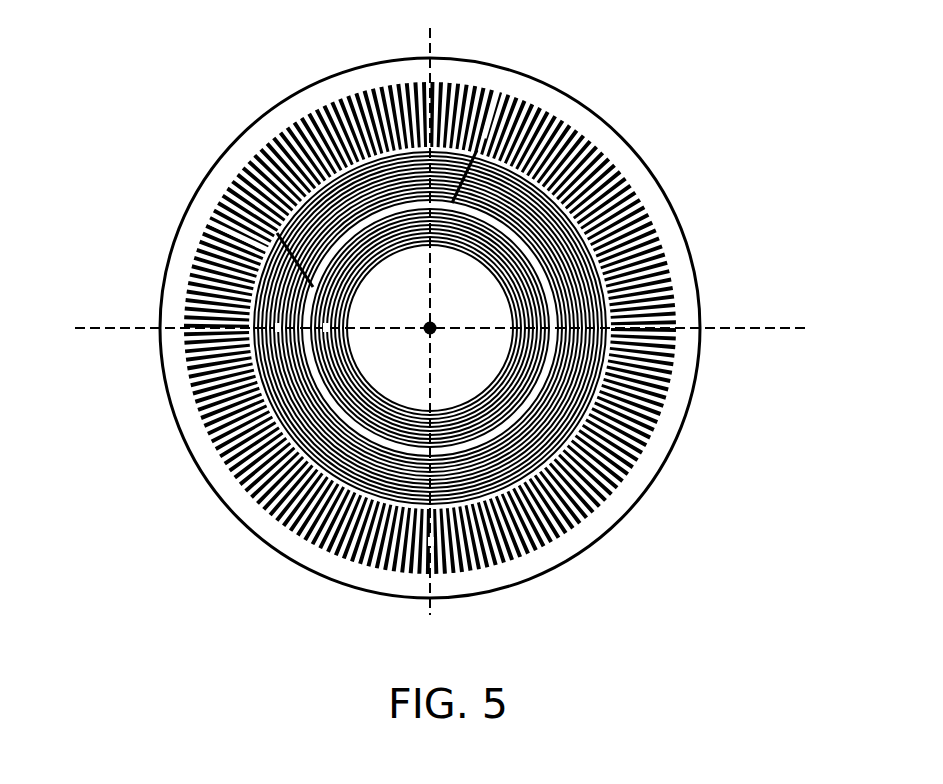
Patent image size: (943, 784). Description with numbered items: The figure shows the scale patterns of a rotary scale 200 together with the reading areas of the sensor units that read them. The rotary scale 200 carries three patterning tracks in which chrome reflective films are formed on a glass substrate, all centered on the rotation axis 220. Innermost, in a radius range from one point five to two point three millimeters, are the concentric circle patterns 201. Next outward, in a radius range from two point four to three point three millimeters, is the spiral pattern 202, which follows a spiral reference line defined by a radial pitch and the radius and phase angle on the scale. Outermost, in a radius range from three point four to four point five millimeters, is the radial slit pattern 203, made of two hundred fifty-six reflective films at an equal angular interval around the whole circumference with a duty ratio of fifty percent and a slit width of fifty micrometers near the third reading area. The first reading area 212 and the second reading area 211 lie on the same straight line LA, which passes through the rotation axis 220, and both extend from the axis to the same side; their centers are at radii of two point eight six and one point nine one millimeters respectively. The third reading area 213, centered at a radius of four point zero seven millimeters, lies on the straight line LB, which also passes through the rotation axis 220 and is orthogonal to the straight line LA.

The rotary scale 200 is at (677, 213).
The concentric circle patterns 201 is at (472, 152).
The spiral pattern 202 is at (600, 145).
The radial slit pattern 203 is at (639, 170).
The second reading area 211 is at (210, 222).
The first reading area 212 is at (192, 270).
The third reading area 213 is at (430, 542).
The rotation axis 220 is at (437, 323).
The straight line LA is at (113, 330).
The straight line LB is at (433, 613).